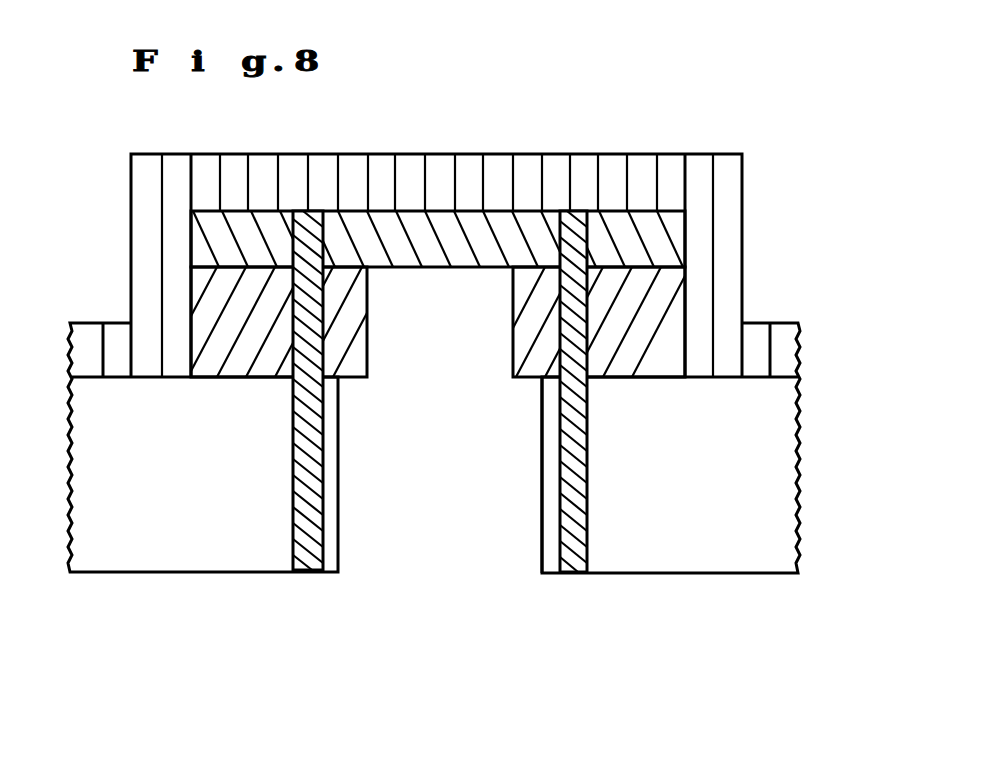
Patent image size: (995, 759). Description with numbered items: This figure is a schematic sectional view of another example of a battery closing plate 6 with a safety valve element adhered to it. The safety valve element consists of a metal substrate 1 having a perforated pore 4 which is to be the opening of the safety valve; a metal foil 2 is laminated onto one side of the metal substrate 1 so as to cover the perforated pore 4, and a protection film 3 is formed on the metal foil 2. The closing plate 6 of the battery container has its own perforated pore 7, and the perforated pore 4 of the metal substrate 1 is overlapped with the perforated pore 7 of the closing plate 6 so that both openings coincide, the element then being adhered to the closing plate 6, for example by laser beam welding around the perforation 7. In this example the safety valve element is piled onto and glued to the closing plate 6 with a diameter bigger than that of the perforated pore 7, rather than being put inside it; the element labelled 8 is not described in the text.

The metal substrate 1 is at (670, 313).
The metal foil 2 is at (662, 244).
The protection film 3 is at (730, 204).
The perforated pore 4 is at (440, 358).
The closing plate 6 is at (775, 504).
The perforated pore 7 is at (508, 543).
The via conductor 8 is at (568, 548).